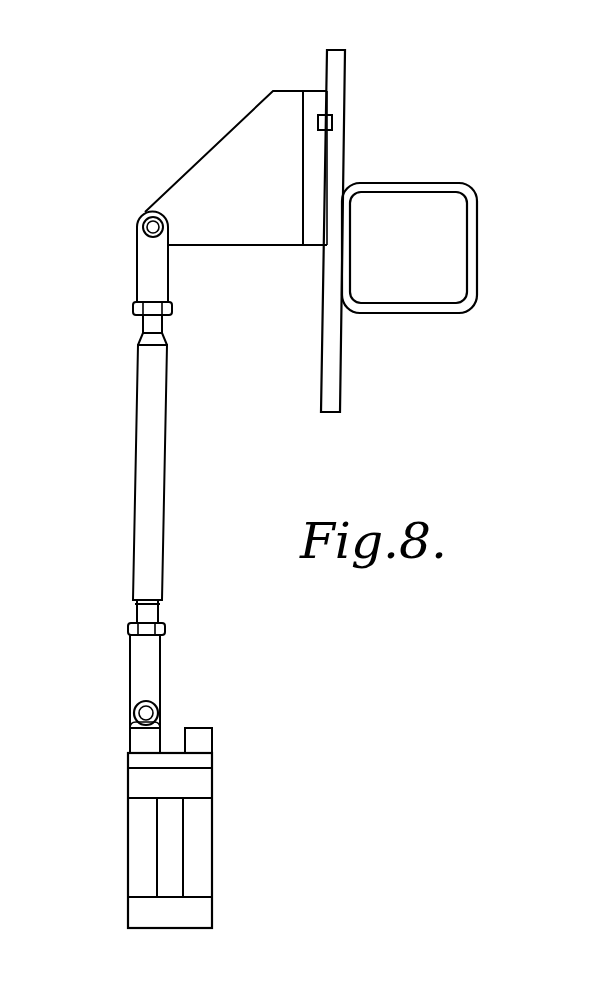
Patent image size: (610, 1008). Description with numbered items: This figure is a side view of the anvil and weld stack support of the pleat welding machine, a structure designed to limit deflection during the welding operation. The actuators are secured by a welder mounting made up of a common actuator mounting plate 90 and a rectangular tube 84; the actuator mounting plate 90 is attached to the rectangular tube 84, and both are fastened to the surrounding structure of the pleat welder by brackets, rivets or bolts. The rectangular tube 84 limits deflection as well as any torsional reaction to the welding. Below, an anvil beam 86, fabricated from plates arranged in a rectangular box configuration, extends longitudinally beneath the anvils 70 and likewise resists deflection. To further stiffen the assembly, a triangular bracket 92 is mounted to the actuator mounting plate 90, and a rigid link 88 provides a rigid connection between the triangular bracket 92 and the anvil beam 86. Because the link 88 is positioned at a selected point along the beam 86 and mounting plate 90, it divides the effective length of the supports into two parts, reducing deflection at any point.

The anvil 70 is at (213, 729).
The rectangular tube 84 is at (475, 235).
The anvil beam 86 is at (203, 842).
The rigid link 88 is at (150, 430).
The actuator mounting plate 90 is at (340, 93).
The triangular bracket 92 is at (225, 157).